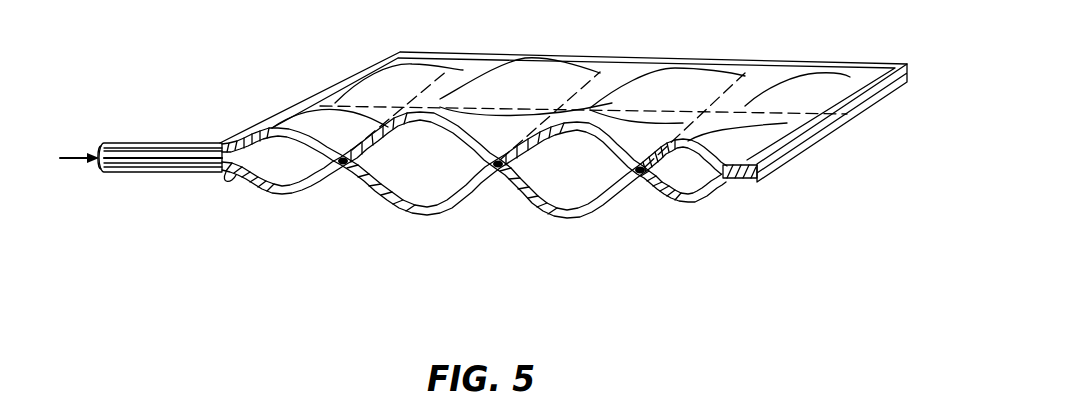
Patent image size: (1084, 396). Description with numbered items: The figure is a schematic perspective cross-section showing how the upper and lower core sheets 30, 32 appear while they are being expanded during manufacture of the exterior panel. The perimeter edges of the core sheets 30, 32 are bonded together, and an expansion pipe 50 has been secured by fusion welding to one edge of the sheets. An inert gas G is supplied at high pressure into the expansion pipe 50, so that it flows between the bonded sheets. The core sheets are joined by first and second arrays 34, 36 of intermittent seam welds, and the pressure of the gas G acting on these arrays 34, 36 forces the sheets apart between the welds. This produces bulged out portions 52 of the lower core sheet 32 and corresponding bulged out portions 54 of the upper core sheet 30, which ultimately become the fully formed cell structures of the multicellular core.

The upper core sheet 30 is at (890, 64).
The lower core sheet 32 is at (887, 95).
The first array of intermittent seam welds 34 is at (577, 91).
The second array of intermittent seam welds 36 is at (790, 117).
The expansion pipe 50 is at (153, 142).
The bulged out portions of the lower core sheet 52 is at (287, 186).
The bulged out portions of the upper core sheet 54 is at (280, 127).
The inert gas G is at (70, 161).